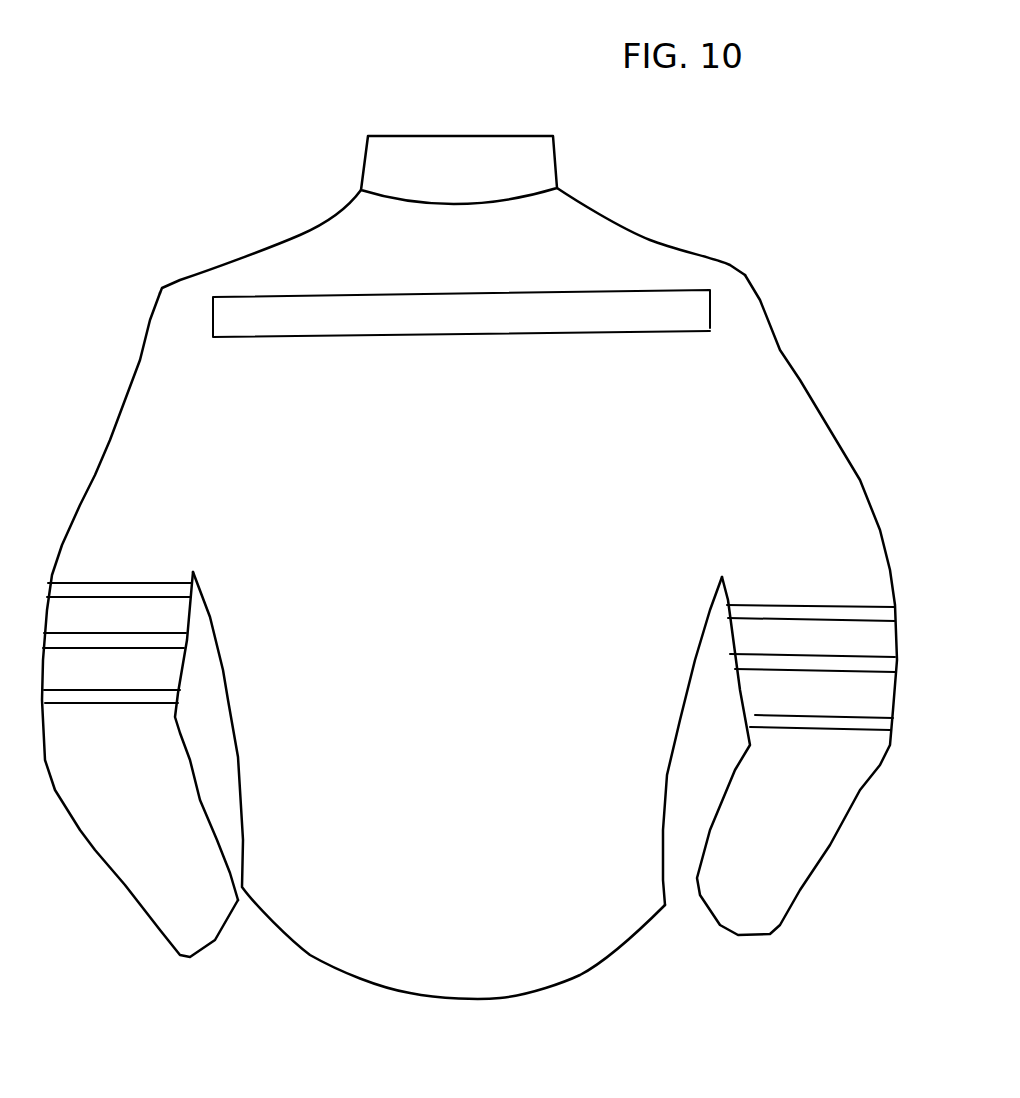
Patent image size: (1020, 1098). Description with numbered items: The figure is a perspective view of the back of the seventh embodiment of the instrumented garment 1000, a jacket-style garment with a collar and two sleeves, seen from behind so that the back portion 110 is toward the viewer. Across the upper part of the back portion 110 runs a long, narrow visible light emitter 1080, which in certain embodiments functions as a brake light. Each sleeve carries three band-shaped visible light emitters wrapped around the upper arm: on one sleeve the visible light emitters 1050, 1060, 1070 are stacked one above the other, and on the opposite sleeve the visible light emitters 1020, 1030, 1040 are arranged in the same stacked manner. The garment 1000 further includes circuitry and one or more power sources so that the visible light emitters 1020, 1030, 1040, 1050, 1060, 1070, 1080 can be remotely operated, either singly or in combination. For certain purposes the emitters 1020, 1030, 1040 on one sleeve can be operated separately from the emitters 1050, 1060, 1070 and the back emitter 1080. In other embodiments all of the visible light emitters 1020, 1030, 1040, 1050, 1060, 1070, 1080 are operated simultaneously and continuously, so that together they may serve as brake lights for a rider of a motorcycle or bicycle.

The garment 1000 is at (457, 1041).
The back portion 110 is at (462, 558).
The visible light emitter 1080 is at (690, 305).
The visible light emitter 1050 is at (66, 582).
The visible light emitter 1060 is at (62, 650).
The visible light emitter 1070 is at (124, 705).
The visible light emitter 1020 is at (740, 608).
The visible light emitter 1030 is at (755, 660).
The visible light emitter 1040 is at (848, 728).